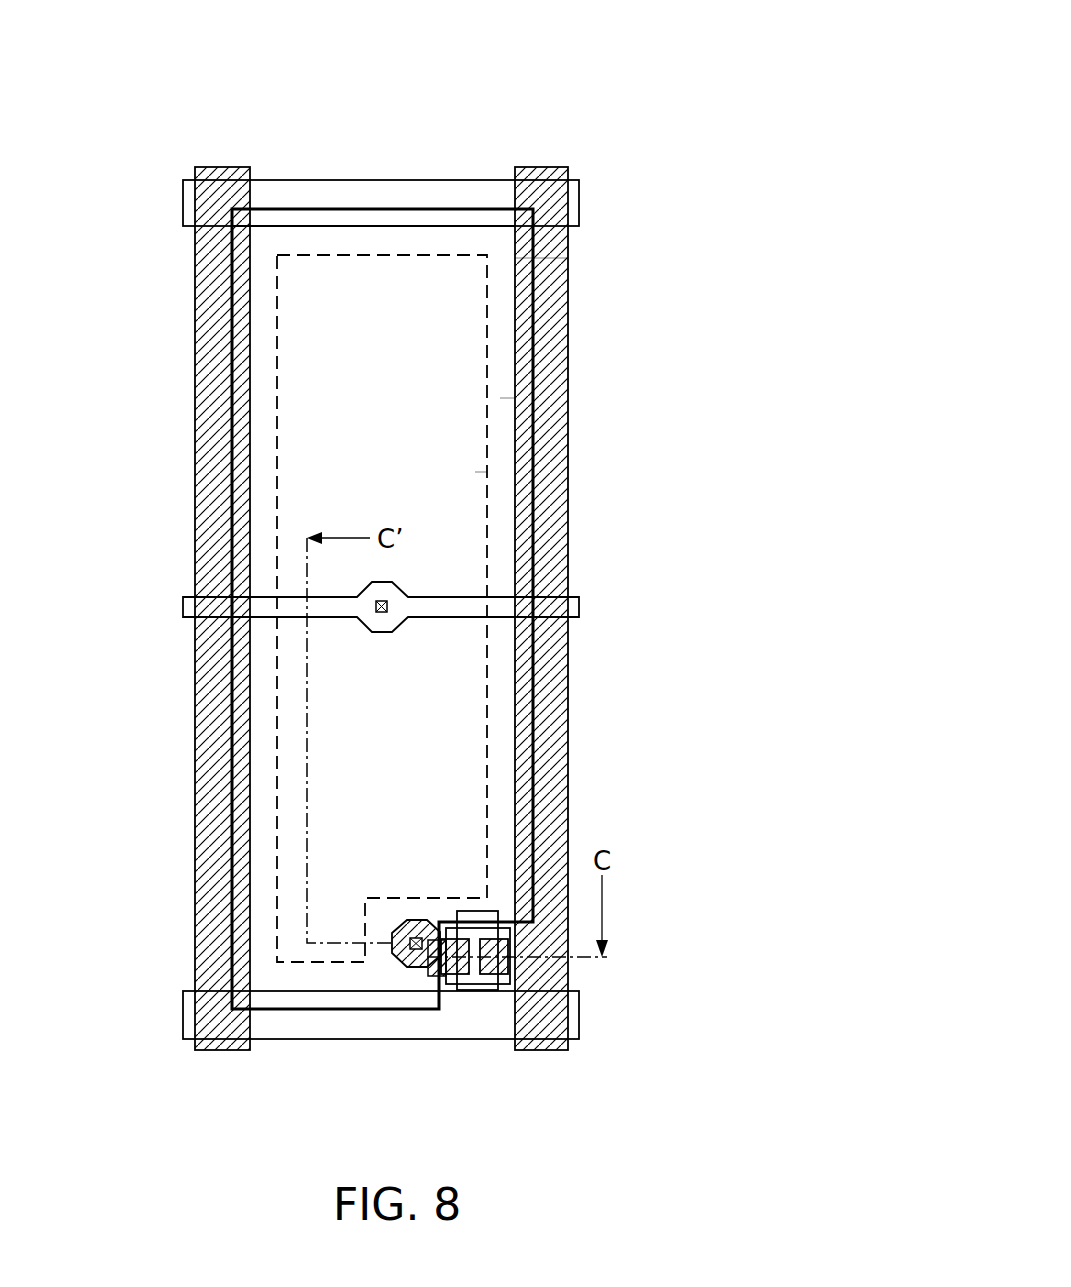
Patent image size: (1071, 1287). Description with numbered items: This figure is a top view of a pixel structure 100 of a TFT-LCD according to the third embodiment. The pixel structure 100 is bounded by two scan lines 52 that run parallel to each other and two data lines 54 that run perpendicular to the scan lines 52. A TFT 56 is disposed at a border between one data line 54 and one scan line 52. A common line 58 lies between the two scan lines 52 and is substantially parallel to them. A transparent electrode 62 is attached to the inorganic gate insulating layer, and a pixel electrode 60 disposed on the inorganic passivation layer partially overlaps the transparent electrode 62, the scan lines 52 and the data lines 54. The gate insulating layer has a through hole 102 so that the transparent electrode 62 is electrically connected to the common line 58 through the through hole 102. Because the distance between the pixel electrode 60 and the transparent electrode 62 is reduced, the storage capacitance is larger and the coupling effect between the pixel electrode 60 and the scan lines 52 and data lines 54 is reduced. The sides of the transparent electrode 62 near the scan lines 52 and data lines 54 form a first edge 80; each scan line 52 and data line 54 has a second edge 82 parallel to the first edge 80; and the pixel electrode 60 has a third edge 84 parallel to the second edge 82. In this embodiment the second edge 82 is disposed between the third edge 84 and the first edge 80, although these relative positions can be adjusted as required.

The pixel structure 100 is at (582, 88).
The scan line 52 is at (315, 188).
The data line 54 is at (218, 745).
The TFT 56 is at (488, 1000).
The common line 58 is at (580, 605).
The pixel electrode 60 is at (505, 403).
The transparent electrode 62 is at (475, 472).
The first edge 80 is at (385, 255).
The second edge 82 is at (420, 226).
The third edge 84 is at (486, 207).
The through hole 102 is at (381, 625).